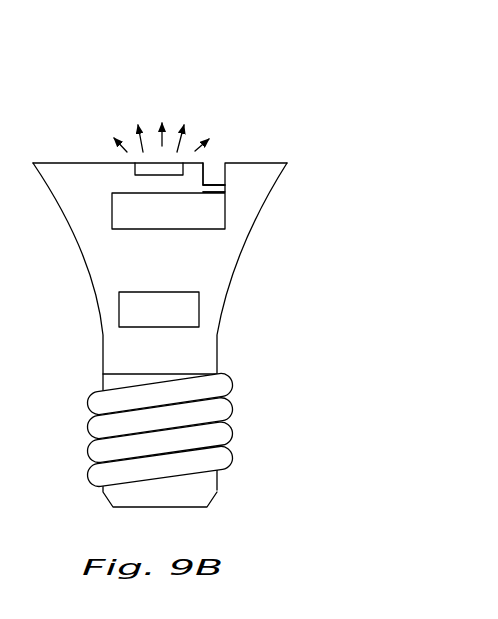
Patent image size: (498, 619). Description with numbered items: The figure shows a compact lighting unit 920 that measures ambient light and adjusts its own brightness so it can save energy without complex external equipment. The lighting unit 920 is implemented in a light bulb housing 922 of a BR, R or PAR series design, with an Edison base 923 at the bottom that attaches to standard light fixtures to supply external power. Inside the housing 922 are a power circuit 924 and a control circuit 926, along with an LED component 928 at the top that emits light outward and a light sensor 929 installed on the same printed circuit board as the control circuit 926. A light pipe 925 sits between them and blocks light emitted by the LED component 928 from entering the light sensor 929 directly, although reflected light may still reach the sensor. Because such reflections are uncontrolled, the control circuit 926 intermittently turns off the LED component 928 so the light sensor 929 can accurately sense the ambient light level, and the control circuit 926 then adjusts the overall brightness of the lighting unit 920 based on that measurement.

The compact lighting unit 920 is at (92, 80).
The light bulb housing 922 is at (229, 268).
The Edison base 923 is at (113, 450).
The power circuit 924 is at (161, 309).
The light pipe 925 is at (206, 175).
The control circuit 926 is at (127, 210).
The LED component 928 is at (158, 170).
The light sensor 929 is at (213, 194).